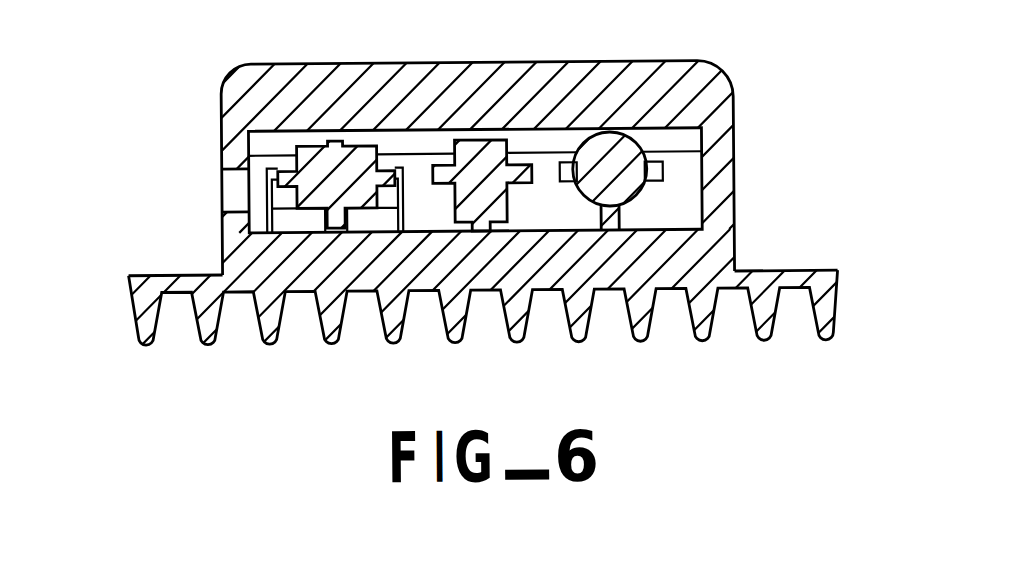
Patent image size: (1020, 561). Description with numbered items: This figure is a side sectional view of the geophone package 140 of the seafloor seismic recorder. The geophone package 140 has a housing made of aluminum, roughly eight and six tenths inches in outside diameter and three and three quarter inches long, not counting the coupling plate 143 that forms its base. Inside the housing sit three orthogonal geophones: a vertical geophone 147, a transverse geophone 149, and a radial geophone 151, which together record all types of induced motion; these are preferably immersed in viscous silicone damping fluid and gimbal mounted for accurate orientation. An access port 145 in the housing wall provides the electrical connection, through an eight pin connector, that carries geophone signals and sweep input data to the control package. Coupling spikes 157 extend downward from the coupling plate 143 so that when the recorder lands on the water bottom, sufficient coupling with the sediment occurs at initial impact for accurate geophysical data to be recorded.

The geophone package 140 is at (194, 90).
The coupling plate 143 is at (168, 273).
The access port 145 is at (222, 185).
The vertical geophone 147 is at (485, 140).
The transverse geophone 149 is at (634, 138).
The radial geophone 151 is at (313, 146).
The coupling spikes 157 is at (142, 330).